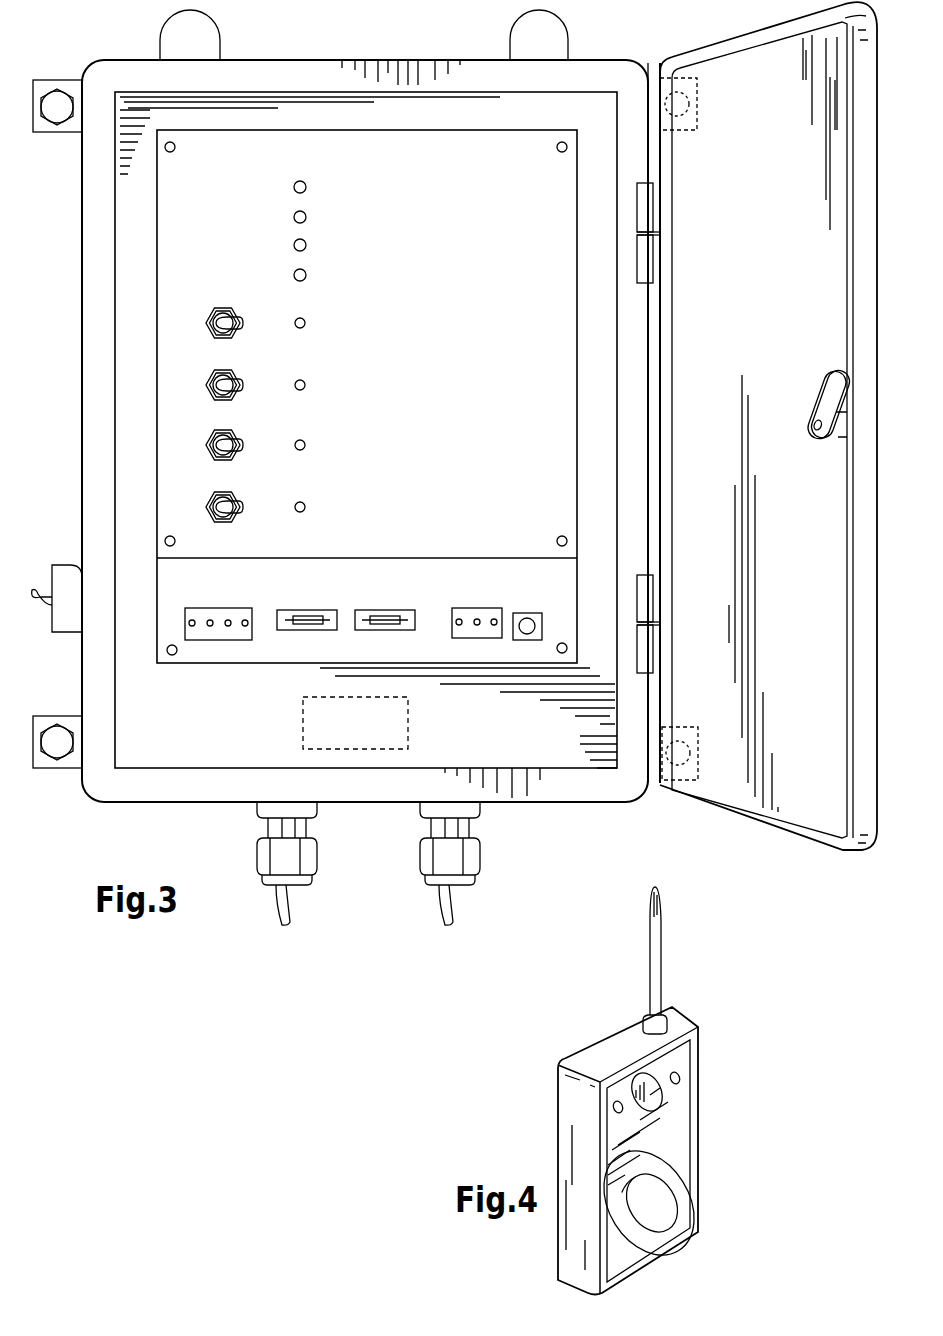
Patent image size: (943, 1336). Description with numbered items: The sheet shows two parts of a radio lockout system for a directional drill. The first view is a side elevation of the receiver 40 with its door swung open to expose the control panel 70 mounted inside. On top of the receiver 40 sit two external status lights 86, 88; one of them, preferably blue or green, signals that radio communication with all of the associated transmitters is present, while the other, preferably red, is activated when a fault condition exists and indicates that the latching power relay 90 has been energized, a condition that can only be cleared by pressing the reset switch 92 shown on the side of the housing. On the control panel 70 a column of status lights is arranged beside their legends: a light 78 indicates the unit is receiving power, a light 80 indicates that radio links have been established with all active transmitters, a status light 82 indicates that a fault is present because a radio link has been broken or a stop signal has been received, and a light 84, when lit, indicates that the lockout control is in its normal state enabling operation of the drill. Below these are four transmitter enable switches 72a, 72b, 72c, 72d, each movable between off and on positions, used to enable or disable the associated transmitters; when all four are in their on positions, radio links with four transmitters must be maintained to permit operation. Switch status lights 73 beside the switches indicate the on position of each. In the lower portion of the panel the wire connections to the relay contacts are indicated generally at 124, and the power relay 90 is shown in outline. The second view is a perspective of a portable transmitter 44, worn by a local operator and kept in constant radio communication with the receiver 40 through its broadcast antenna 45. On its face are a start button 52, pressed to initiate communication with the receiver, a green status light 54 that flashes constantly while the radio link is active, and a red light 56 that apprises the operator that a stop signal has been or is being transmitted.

In FIG. 3, the receiver 40 is at (66, 395).
In FIG. 3, the external status light 86 is at (195, 38).
In FIG. 3, the external status light 88 is at (533, 33).
In FIG. 3, the control panel 70 is at (213, 197).
In FIG. 3, the power light 78 is at (295, 184).
In FIG. 3, the radio link light 80 is at (294, 216).
In FIG. 3, the fault status light 82 is at (294, 244).
In FIG. 3, the normal state light 84 is at (294, 274).
In FIG. 3, the transmitter enable switch 72a is at (229, 308).
In FIG. 3, the transmitter enable switch 72b is at (229, 370).
In FIG. 3, the transmitter enable switch 72c is at (229, 430).
In FIG. 3, the transmitter enable switch 72d is at (229, 492).
In FIG. 3, the switch status lights 73 is at (304, 326).
In FIG. 3, the wire connections to the contacts 124 is at (448, 591).
In FIG. 3, the latching power relay 90 is at (371, 733).
In FIG. 3, the reset switch 92 is at (65, 583).
In FIG. 4, the transmitter 44 is at (530, 1128).
In FIG. 4, the broadcast antenna 45 is at (656, 960).
In FIG. 4, the start button 52 is at (652, 1096).
In FIG. 4, the green status light 54 is at (616, 1100).
In FIG. 4, the red light 56 is at (681, 1079).